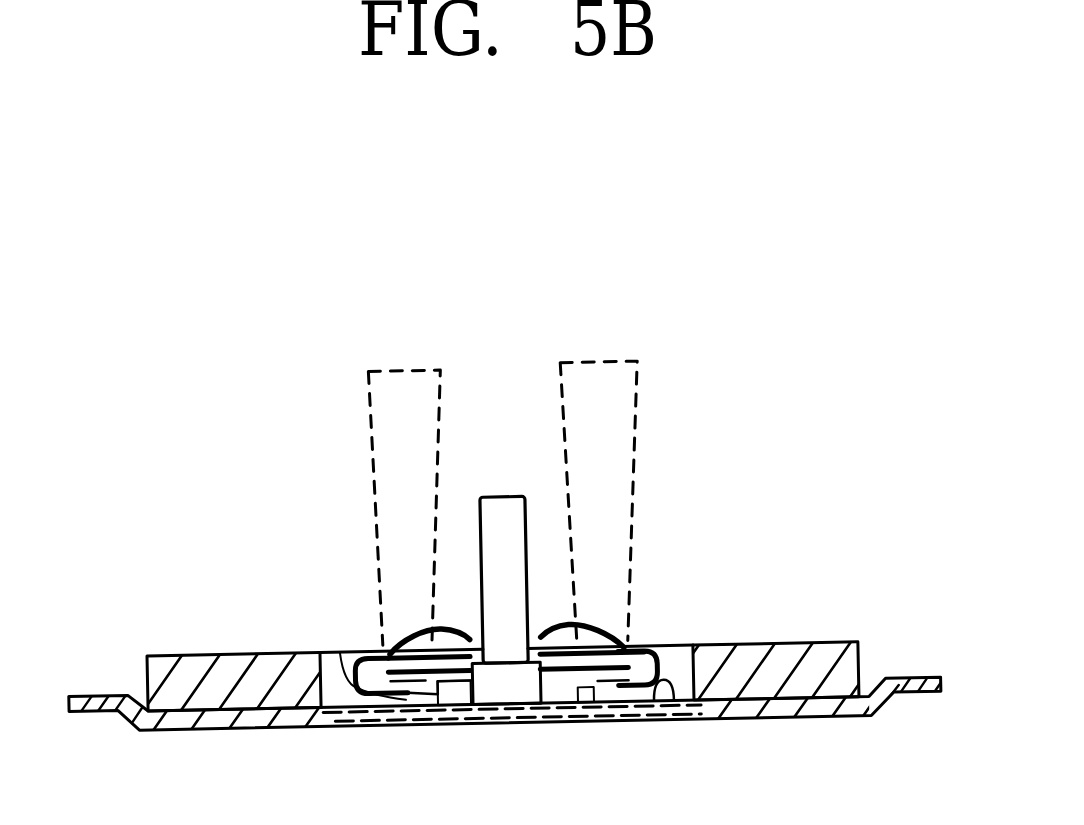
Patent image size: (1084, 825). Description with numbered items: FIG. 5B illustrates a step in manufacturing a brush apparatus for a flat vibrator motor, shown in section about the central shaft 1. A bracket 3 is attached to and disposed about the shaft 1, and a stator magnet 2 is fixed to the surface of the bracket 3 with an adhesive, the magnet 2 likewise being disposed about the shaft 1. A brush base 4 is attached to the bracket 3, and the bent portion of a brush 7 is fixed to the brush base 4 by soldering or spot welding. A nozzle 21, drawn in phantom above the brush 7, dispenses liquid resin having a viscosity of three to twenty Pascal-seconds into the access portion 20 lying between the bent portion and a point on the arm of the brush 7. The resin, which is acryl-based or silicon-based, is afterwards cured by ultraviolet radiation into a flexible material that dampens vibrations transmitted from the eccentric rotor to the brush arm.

The shaft 1 is at (493, 497).
The stator magnet 2 is at (805, 658).
The bracket 3 is at (853, 713).
The brush base 4 is at (678, 715).
The brush 7 is at (672, 658).
The access portion 20 is at (340, 652).
The nozzle 21 is at (397, 467).